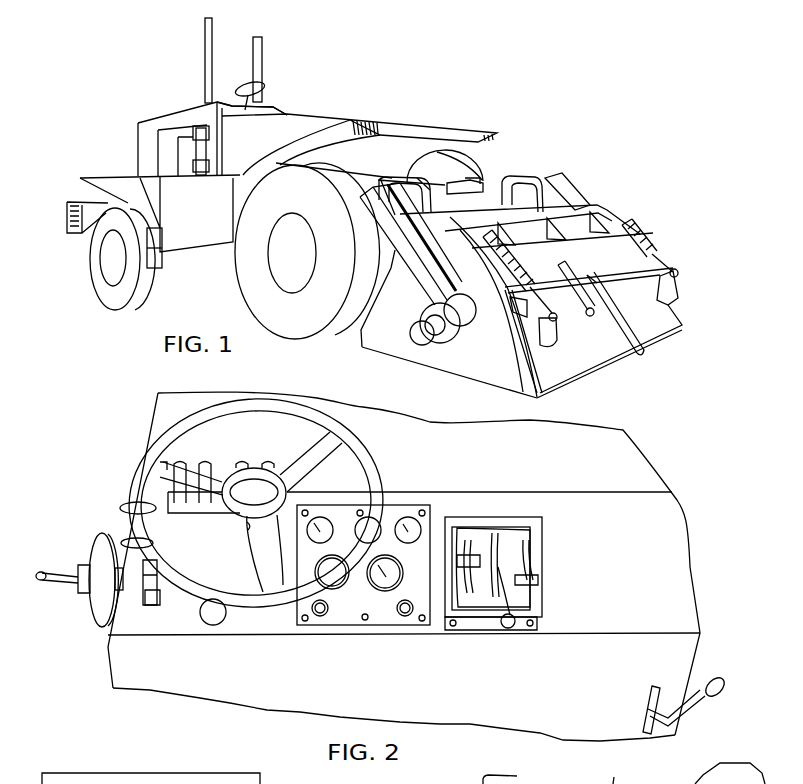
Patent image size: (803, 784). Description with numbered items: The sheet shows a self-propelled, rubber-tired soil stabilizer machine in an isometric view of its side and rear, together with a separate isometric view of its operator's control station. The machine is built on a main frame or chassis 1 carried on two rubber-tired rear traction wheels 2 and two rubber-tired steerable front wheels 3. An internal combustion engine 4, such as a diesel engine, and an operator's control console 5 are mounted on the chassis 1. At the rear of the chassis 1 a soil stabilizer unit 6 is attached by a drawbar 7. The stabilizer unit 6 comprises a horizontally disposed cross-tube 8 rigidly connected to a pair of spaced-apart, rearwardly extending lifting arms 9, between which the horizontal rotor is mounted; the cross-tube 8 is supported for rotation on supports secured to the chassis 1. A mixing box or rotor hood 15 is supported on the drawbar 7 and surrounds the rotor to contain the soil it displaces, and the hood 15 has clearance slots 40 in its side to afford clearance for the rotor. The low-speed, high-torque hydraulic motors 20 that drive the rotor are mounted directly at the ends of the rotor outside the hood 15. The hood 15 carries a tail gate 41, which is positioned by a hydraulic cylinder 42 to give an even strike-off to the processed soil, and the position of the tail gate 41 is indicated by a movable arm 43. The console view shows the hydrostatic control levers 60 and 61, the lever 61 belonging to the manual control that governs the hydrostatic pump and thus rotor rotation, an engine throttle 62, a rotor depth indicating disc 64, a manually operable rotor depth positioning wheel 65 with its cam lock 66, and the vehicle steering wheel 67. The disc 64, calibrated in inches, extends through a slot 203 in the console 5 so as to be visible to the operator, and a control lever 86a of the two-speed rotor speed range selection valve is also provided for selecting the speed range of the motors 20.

In FIG. 1, the main frame or chassis 1 is at (206, 242).
In FIG. 1, the rear traction wheels 2 is at (240, 280).
In FIG. 1, the steerable front wheels 3 is at (145, 282).
In FIG. 1, the internal combustion engine 4 is at (185, 158).
In FIG. 1, the operator's control console 5 is at (270, 107).
In FIG. 2, the operator's control console 5 is at (707, 587).
In FIG. 1, the soil stabilizer unit 6 is at (592, 203).
In FIG. 1, the drawbar 7 is at (404, 180).
In FIG. 1, the cross-tube 8 is at (455, 205).
In FIG. 1, the lifting arms 9 is at (440, 268).
In FIG. 1, the mixing box or rotor hood 15 is at (622, 238).
In FIG. 1, the low-speed high torque motors 20 is at (442, 333).
In FIG. 1, the clearance slots 40 is at (420, 330).
In FIG. 1, the tail gate 41 is at (660, 313).
In FIG. 1, the hydraulic cylinder 42 is at (652, 243).
In FIG. 1, the movable arm 43 is at (568, 270).
In FIG. 2, the hydrostatic control lever 60 is at (473, 553).
In FIG. 2, the hydrostatic control lever 61 is at (505, 600).
In FIG. 2, the engine throttle 62 is at (537, 582).
In FIG. 2, the rotor depth indicating disc 64 is at (153, 587).
In FIG. 2, the rotor depth positioning wheel 65 is at (92, 617).
In FIG. 2, the cam lock 66 is at (63, 582).
In FIG. 2, the vehicle steering wheel 67 is at (180, 587).
In FIG. 2, the slot 203 is at (152, 600).
In FIG. 2, the control lever 86a is at (694, 706).